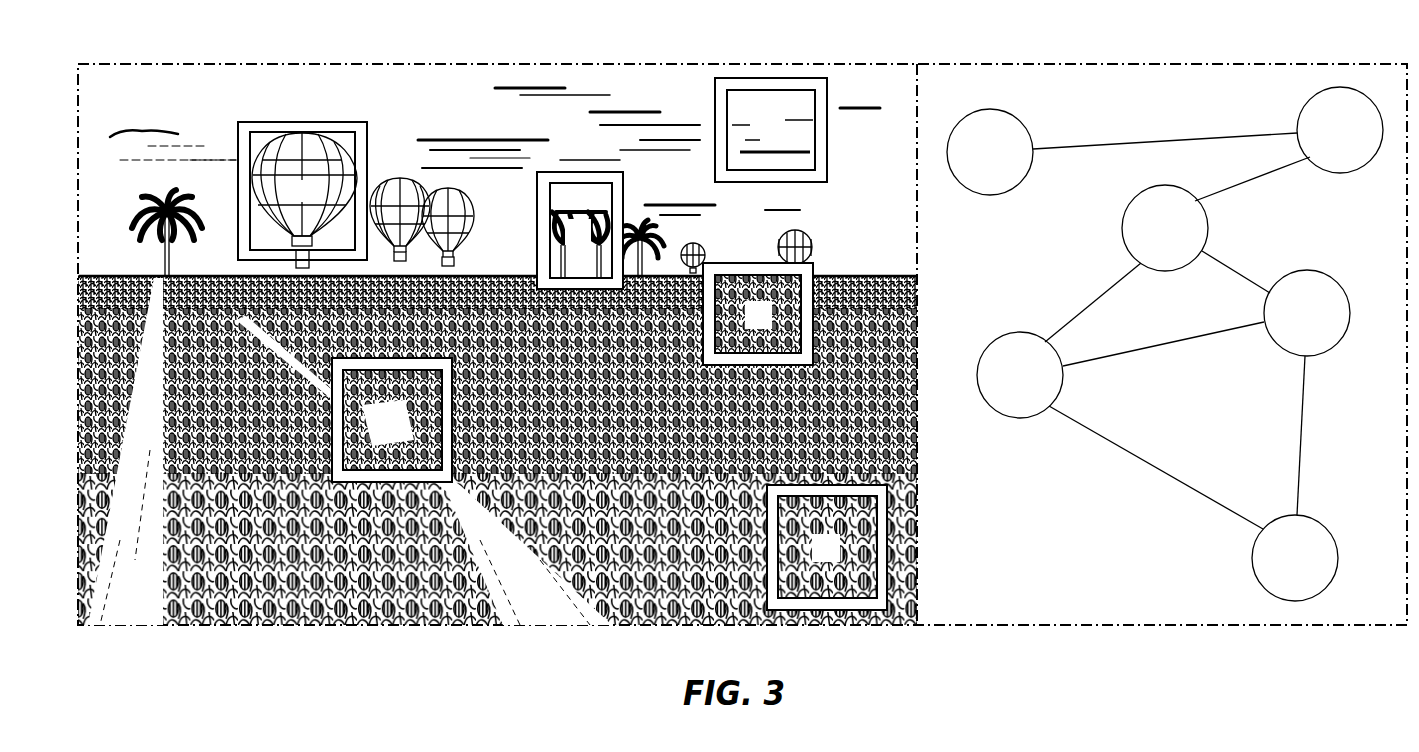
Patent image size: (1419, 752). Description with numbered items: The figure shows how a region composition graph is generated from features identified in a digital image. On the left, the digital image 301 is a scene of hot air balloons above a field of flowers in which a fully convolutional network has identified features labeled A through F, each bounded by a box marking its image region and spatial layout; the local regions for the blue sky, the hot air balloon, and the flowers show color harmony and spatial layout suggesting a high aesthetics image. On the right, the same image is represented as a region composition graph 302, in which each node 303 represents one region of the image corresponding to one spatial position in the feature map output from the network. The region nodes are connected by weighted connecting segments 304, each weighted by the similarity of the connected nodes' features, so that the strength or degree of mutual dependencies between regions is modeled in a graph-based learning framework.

The digital image 301 is at (141, 63).
The region composition graph 302 is at (1352, 63).
The node 303 is at (1026, 122).
The weighted connecting segment 304 is at (1146, 139).